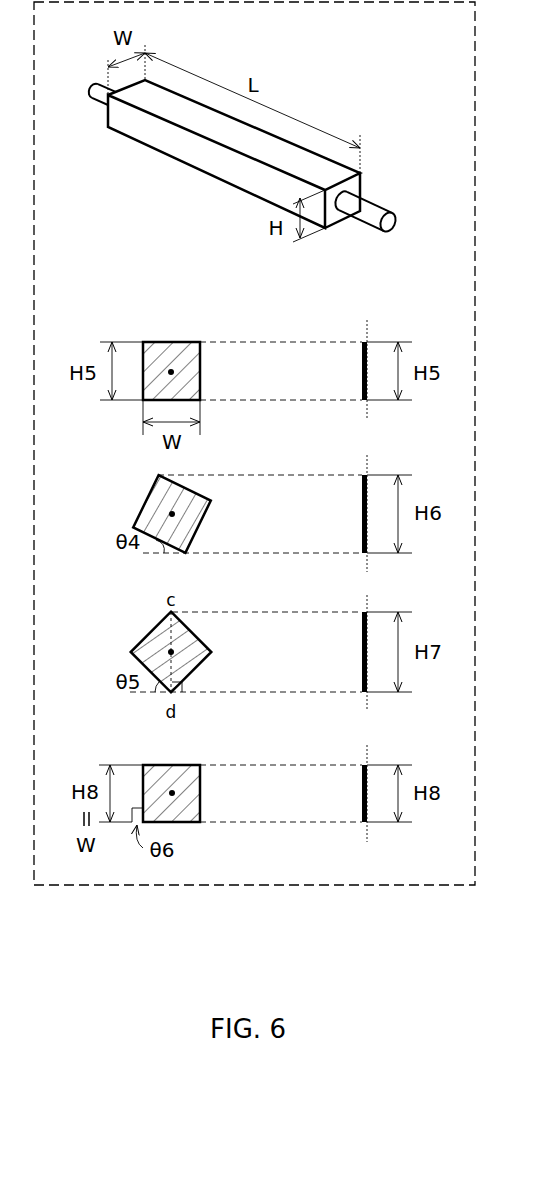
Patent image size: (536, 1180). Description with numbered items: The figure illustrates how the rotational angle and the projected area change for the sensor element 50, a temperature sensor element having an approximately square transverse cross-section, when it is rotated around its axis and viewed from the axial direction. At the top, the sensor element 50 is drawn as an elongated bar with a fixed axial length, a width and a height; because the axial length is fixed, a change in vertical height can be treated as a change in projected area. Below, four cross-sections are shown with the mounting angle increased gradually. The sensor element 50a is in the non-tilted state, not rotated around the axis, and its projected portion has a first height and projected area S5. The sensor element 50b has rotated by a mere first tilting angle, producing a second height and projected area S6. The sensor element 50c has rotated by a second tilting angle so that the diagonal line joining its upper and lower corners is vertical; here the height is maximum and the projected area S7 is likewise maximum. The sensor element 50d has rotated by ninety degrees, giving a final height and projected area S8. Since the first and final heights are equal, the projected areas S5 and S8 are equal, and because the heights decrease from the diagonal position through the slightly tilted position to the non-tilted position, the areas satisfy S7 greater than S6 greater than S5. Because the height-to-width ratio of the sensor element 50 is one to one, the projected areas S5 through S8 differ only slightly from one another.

The sensor element 50 is at (203, 163).
The sensor element 50a is at (174, 342).
The sensor element 50b is at (147, 502).
The sensor element 50c is at (147, 632).
The sensor element 50d is at (168, 765).
The projected area S5 is at (362, 373).
The projected area S6 is at (362, 517).
The projected area S7 is at (362, 655).
The projected area S8 is at (362, 795).